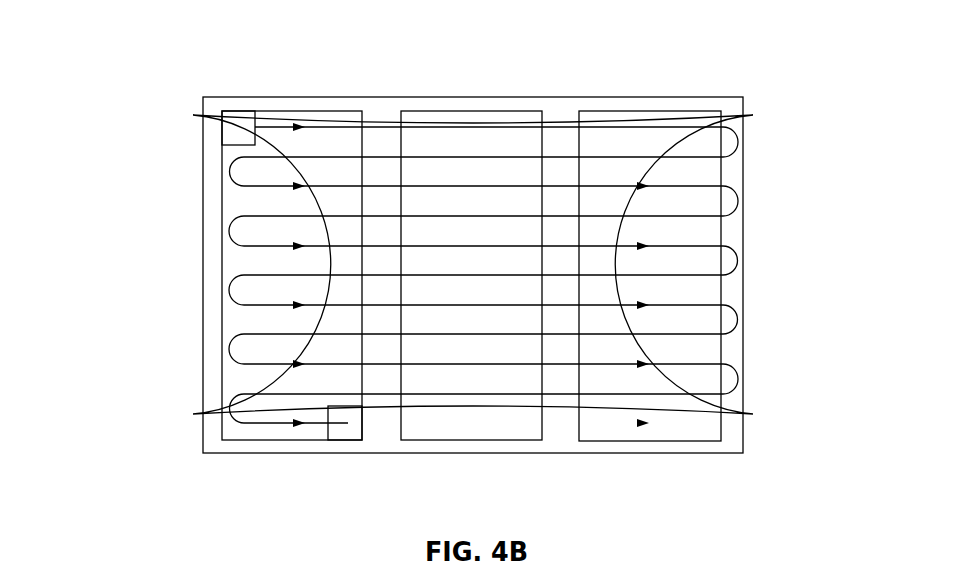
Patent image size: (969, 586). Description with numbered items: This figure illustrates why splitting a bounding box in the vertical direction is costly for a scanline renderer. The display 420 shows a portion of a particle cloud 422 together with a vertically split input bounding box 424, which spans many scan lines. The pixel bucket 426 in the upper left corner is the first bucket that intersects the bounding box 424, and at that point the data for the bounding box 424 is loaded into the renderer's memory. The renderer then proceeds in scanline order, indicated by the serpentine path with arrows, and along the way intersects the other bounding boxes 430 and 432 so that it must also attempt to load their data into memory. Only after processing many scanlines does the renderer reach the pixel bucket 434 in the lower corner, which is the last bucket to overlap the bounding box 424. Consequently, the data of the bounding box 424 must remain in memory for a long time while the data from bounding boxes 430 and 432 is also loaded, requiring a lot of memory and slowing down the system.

The display 420 is at (702, 98).
The particle cloud 422 is at (818, 128).
The vertically split input bounding box 424 is at (293, 111).
The pixel bucket 426 is at (229, 130).
The bounding box 430 is at (470, 111).
The bounding box 432 is at (650, 111).
The pixel bucket 434 is at (348, 433).